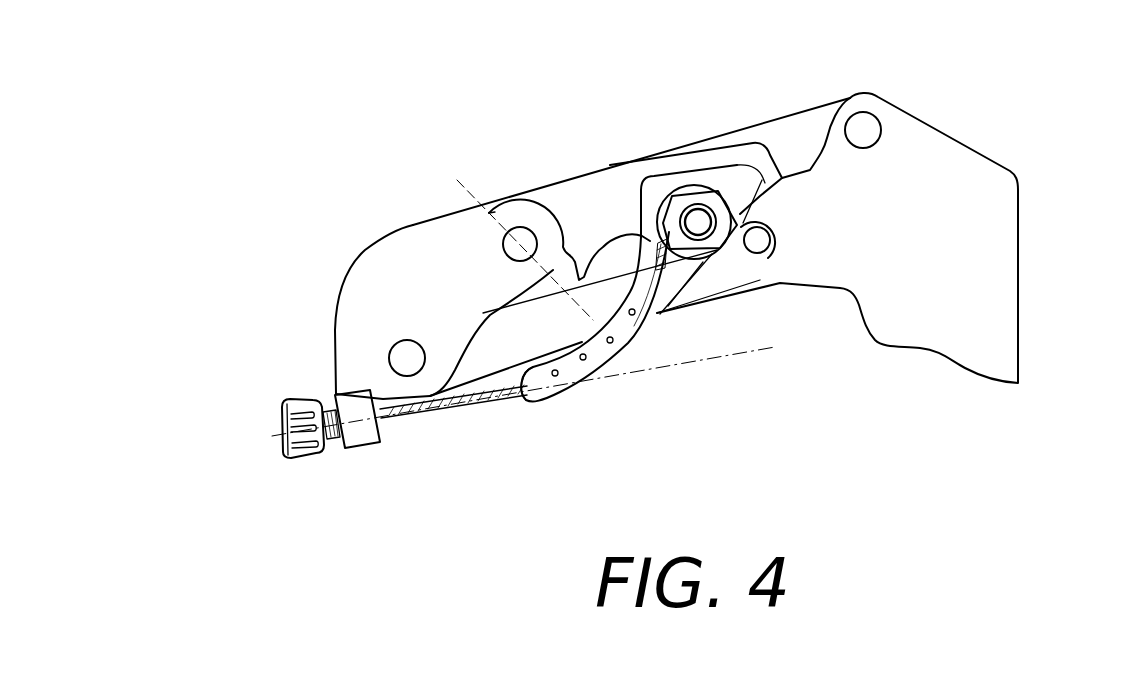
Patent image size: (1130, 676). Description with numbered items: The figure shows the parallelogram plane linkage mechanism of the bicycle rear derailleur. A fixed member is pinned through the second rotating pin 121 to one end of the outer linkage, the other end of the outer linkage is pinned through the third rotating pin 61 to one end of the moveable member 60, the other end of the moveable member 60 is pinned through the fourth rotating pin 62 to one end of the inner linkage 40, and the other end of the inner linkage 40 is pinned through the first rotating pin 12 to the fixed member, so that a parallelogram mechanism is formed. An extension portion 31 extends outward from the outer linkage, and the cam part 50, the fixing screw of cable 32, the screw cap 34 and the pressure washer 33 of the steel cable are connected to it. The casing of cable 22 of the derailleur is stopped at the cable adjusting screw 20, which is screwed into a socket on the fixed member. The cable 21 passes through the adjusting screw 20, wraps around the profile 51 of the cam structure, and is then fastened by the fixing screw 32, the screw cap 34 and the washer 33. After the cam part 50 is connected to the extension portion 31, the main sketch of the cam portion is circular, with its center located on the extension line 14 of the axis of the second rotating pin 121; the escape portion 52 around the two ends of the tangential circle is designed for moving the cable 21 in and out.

The first rotating pin 12 is at (392, 358).
The extension line 14 is at (503, 253).
The second rotating pin 121 is at (520, 237).
The cable adjusting screw 20 is at (306, 430).
The cable 21 is at (380, 417).
The casing of cable 22 is at (625, 355).
The extension portion 31 is at (718, 182).
The fixing screw of cable 32 is at (672, 225).
The pressure washer 33 is at (734, 228).
The screw cap 34 is at (678, 196).
The inner linkage 40 is at (480, 363).
The cam part 50 is at (667, 320).
The profile 51 is at (572, 388).
The escape portion 52 is at (520, 402).
The moveable member 60 is at (970, 192).
The third rotating pin 61 is at (871, 124).
The fourth rotating pin 62 is at (755, 250).